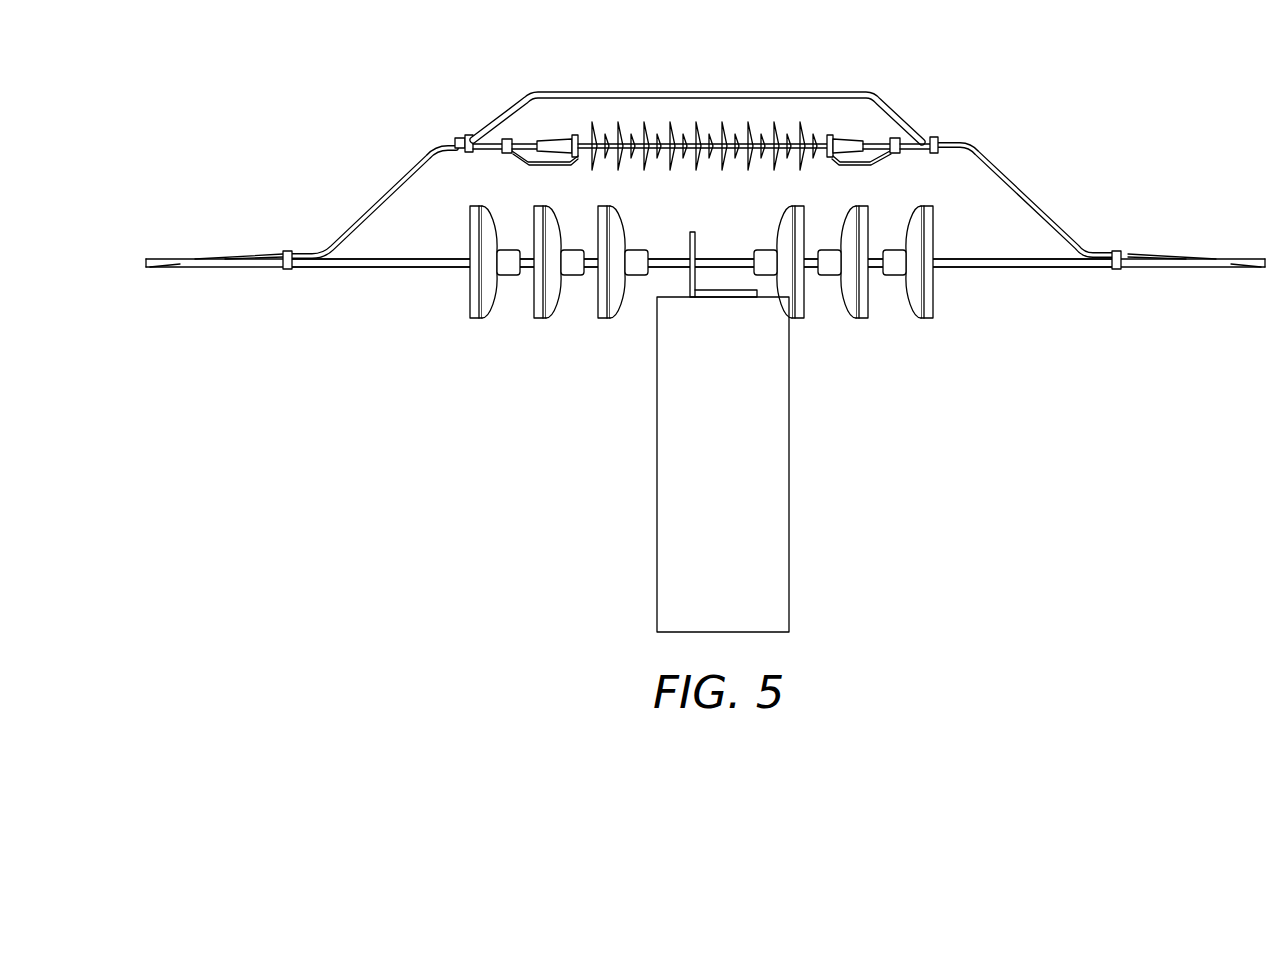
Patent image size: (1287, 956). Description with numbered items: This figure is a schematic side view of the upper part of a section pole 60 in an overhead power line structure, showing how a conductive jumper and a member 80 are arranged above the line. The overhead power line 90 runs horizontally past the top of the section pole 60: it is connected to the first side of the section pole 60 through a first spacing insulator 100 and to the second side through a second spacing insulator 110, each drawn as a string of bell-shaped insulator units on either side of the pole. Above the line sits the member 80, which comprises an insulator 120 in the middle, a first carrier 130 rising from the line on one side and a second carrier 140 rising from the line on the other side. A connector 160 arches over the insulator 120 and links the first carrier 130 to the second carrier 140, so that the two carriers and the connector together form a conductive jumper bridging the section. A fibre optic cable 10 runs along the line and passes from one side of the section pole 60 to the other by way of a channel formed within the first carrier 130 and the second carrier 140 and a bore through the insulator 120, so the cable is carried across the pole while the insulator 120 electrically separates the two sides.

The fibre optic cable 10 is at (705, 330).
The section pole 60 is at (805, 515).
The member 80 is at (723, 142).
The overhead power line 90 is at (364, 281).
The first spacing insulator 100 is at (484, 332).
The second spacing insulator 110 is at (938, 332).
The insulator 120 is at (687, 180).
The first carrier 130 is at (372, 184).
The second carrier 140 is at (1054, 201).
The connector 160 is at (716, 83).